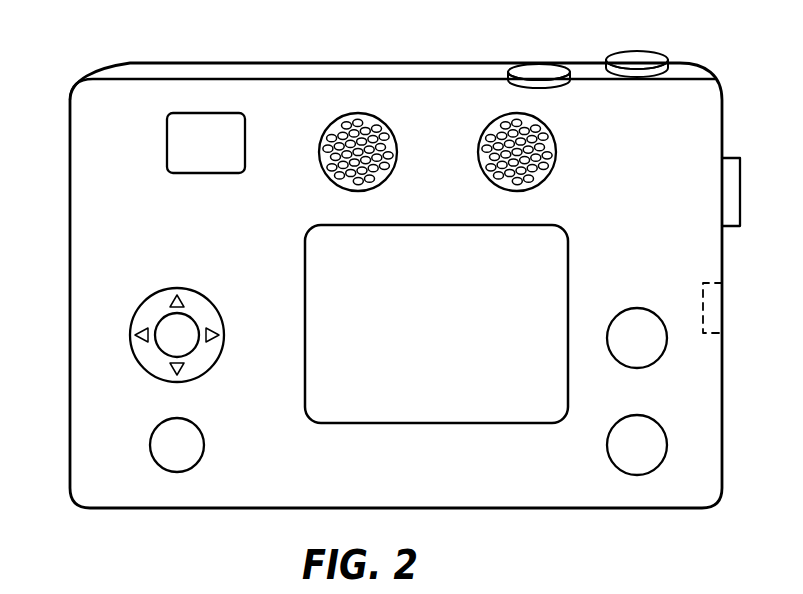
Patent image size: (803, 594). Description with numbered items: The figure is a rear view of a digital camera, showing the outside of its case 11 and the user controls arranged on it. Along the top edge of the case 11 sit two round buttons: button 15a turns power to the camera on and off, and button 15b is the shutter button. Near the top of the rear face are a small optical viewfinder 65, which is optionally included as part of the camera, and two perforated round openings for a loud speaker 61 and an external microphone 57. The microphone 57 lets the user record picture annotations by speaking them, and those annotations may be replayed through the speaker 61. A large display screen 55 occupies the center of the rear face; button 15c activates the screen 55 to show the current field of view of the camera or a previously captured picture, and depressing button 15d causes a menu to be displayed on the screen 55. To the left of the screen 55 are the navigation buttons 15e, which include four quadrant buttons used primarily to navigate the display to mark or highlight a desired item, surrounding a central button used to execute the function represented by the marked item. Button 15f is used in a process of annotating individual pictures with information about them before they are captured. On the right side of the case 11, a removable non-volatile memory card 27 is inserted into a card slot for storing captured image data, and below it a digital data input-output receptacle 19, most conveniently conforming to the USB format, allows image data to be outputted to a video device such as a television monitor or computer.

The case 11 is at (82, 212).
The power button 15a is at (538, 67).
The shutter button 15b is at (637, 53).
The display button 15c is at (633, 322).
The menu button 15d is at (186, 432).
The navigation buttons 15e is at (204, 310).
The annotate button 15f is at (615, 438).
The digital data input-output receptacle 19 is at (717, 303).
The non-volatile memory card 27 is at (730, 157).
The display screen 55 is at (403, 424).
The external microphone 57 is at (480, 168).
The loud speaker 61 is at (325, 168).
The optical viewfinder 65 is at (174, 137).